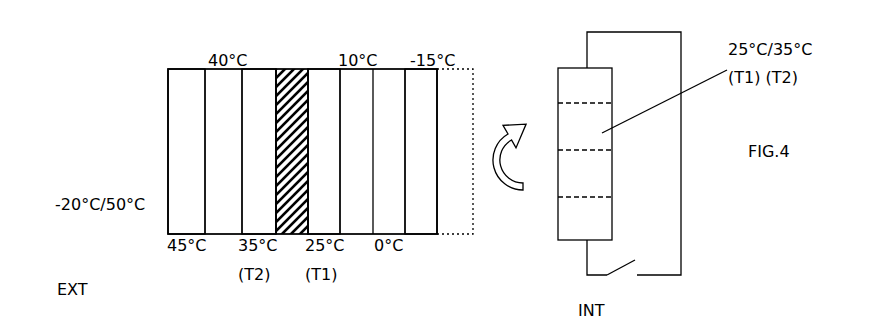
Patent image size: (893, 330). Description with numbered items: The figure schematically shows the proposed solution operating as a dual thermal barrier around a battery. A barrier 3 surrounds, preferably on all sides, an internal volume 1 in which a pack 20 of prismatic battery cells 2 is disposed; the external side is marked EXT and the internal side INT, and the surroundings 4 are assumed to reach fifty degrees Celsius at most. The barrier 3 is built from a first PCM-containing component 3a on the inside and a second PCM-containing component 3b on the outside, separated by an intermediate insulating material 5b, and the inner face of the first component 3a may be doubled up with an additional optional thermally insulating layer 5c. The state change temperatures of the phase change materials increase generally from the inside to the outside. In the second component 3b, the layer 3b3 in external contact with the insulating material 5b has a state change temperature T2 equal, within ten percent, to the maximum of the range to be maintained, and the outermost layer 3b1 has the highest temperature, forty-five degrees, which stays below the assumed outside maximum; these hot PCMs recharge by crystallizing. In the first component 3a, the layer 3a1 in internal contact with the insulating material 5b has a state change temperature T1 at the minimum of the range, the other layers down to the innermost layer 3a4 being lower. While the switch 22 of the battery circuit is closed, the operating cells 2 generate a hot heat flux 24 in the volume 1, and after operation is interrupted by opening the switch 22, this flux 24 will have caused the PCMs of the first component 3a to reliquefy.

The internal volume 1 is at (583, 280).
The prismatic battery cells 2 is at (597, 83).
The barrier 3 is at (160, 65).
The first PCM-containing component 3a is at (437, 276).
The second PCM-containing component 3b is at (273, 275).
The layer of the first component 3a1 is at (315, 77).
The layer of the first component 3a4 is at (412, 78).
The outermost layer 3b1 is at (187, 124).
The layer of the second component 3b3 is at (260, 78).
The exterior environment 4 is at (99, 151).
The intermediate insulating material 5b is at (287, 73).
The additional optional thermally insulating layer 5c is at (462, 225).
The pack 20 is at (601, 59).
The switch 22 is at (620, 275).
The heat flux 24 is at (500, 150).